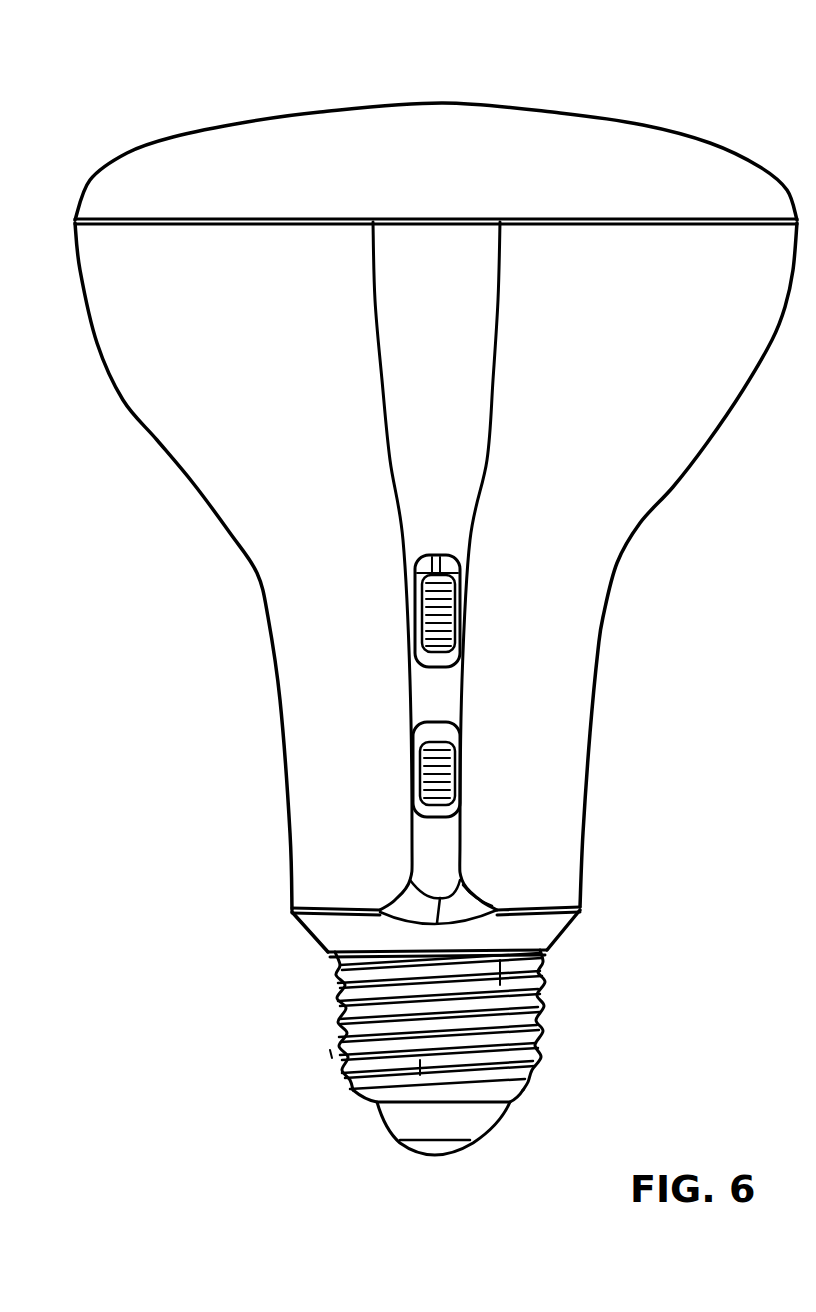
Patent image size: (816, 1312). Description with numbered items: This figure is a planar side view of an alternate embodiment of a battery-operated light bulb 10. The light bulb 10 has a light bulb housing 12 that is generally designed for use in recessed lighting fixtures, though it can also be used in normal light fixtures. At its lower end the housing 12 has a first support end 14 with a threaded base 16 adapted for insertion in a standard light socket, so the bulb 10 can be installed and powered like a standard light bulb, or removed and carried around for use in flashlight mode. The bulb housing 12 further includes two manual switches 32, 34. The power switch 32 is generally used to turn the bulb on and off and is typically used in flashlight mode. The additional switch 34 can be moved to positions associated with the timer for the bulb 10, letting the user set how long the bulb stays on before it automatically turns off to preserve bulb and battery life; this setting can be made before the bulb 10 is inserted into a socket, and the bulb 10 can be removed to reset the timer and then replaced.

The battery-operated light bulb 10 is at (116, 74).
The light bulb housing 12 is at (642, 487).
The first support end 14 is at (246, 937).
The threaded base 16 is at (546, 1052).
The power switch 32 is at (401, 625).
The additional switch 34 is at (469, 772).